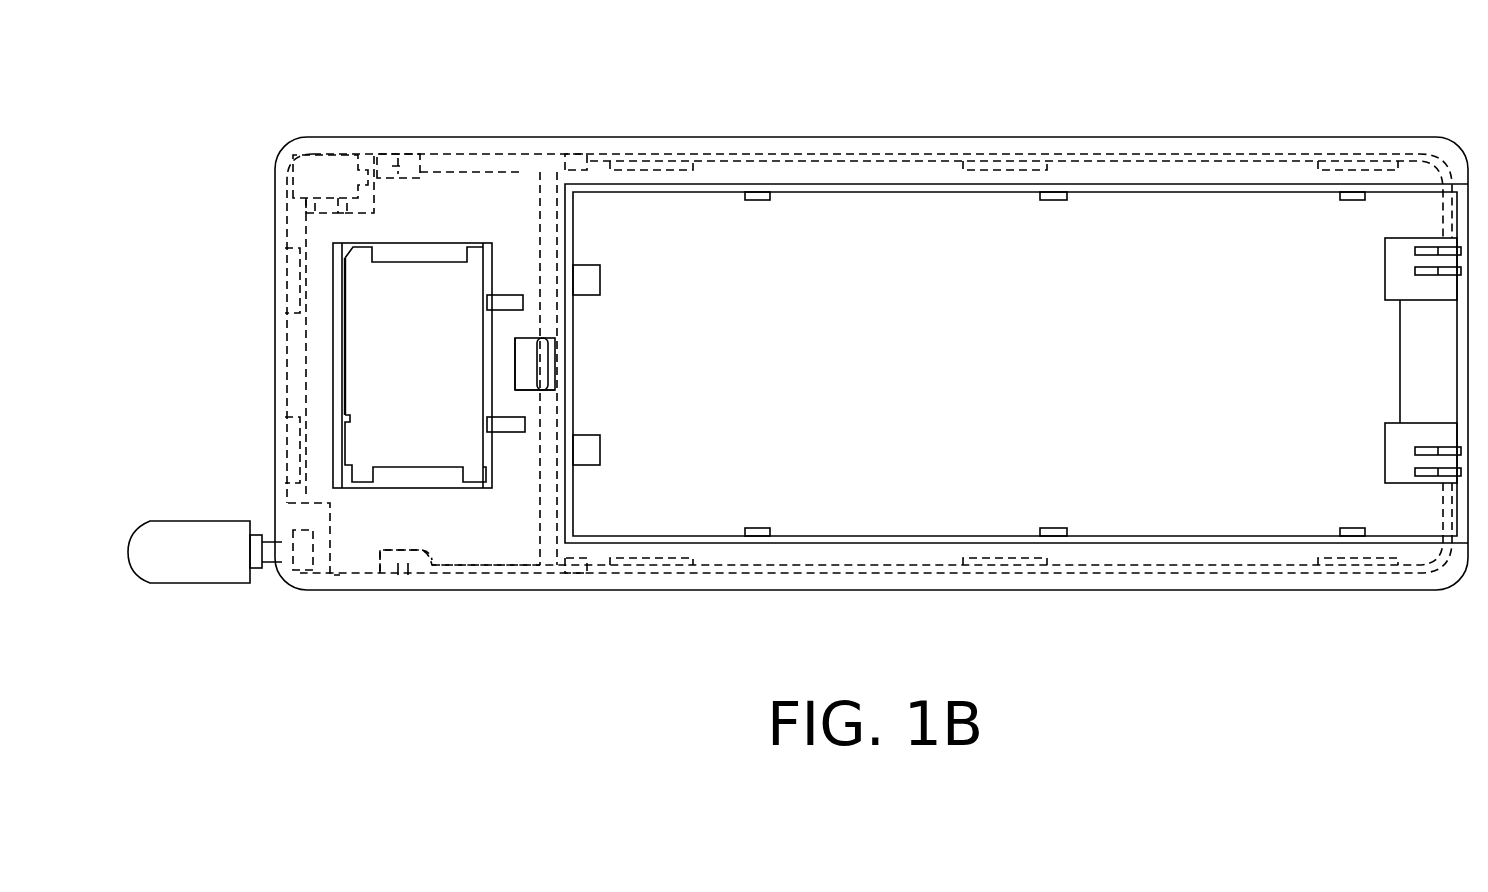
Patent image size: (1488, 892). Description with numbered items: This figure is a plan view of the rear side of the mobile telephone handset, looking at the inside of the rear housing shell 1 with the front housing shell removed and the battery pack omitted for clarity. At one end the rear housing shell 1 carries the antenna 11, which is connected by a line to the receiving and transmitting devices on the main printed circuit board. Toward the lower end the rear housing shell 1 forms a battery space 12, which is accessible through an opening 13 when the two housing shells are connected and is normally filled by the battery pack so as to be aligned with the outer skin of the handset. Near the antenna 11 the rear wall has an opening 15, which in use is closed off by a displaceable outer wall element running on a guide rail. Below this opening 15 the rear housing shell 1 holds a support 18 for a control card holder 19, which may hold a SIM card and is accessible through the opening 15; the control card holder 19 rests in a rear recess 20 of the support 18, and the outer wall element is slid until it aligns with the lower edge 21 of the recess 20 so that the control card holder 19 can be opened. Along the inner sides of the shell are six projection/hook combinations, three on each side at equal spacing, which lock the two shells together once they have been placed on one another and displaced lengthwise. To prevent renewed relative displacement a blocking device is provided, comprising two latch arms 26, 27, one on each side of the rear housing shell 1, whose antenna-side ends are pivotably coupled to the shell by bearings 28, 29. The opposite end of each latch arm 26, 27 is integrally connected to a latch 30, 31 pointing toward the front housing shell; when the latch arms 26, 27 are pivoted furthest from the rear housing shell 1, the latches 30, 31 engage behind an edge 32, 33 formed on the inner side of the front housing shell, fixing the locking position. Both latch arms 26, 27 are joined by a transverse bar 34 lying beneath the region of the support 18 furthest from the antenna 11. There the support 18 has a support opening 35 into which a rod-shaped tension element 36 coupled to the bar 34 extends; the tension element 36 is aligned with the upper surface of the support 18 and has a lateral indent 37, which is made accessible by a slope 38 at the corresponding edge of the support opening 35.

The rear housing shell 1 is at (278, 445).
The antenna 11 is at (150, 545).
The battery space 12 is at (1180, 248).
The opening 13 is at (1112, 184).
The opening 15 is at (363, 489).
The support 18 is at (333, 270).
The control card holder 19 is at (350, 322).
The rear recess 20 is at (425, 247).
The lower edge 21 is at (493, 450).
The latch arm 26 is at (480, 152).
The latch arm 27 is at (449, 572).
The bearing 28 is at (380, 152).
The bearing 29 is at (404, 575).
The latch 30 is at (592, 160).
The latch 31 is at (590, 572).
The edge 32 is at (568, 153).
The edge 33 is at (572, 573).
The bar 34 is at (556, 198).
The support opening 35 is at (548, 382).
The tension element 36 is at (558, 350).
The lateral indent 37 is at (555, 382).
The slope 38 is at (518, 350).